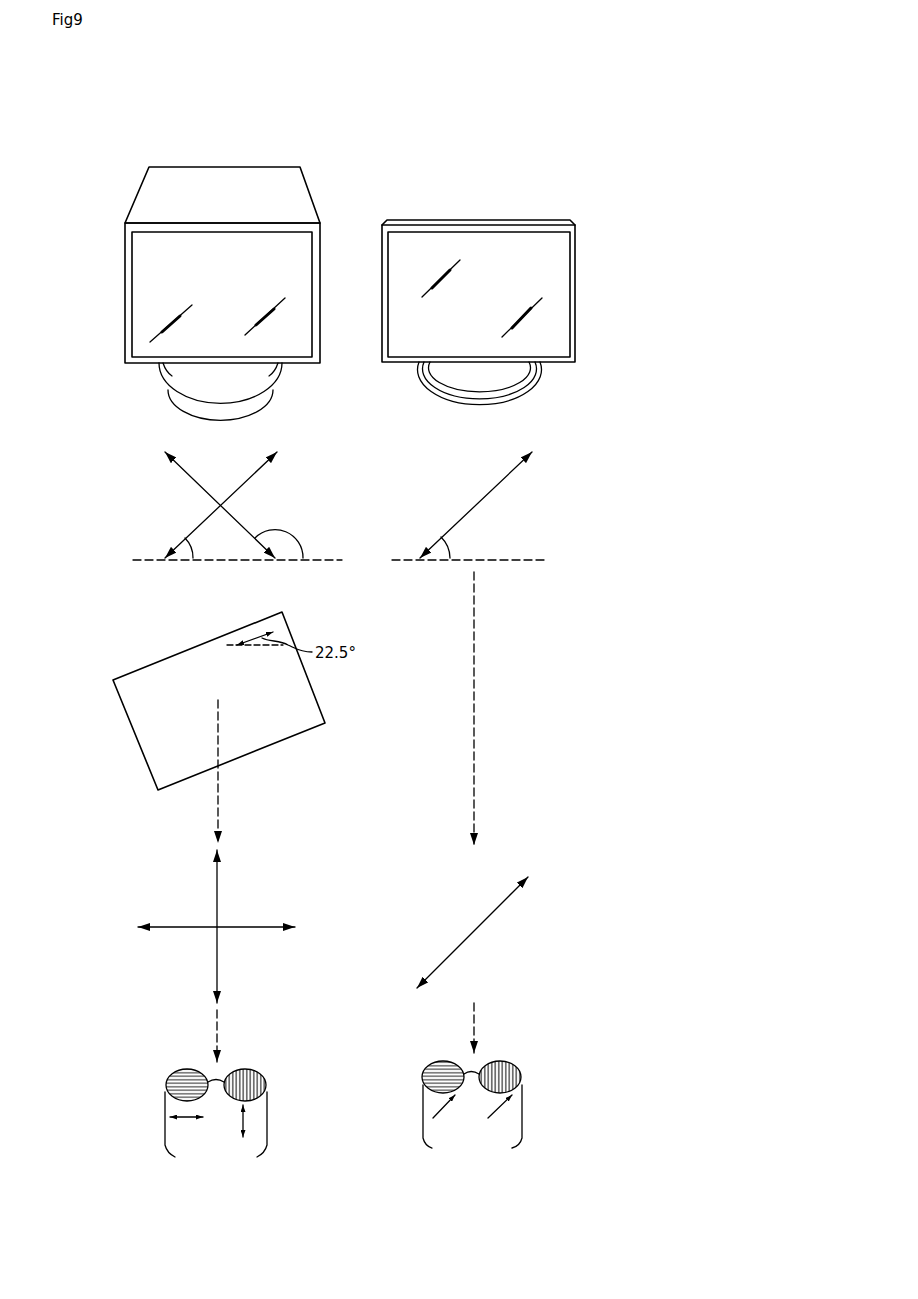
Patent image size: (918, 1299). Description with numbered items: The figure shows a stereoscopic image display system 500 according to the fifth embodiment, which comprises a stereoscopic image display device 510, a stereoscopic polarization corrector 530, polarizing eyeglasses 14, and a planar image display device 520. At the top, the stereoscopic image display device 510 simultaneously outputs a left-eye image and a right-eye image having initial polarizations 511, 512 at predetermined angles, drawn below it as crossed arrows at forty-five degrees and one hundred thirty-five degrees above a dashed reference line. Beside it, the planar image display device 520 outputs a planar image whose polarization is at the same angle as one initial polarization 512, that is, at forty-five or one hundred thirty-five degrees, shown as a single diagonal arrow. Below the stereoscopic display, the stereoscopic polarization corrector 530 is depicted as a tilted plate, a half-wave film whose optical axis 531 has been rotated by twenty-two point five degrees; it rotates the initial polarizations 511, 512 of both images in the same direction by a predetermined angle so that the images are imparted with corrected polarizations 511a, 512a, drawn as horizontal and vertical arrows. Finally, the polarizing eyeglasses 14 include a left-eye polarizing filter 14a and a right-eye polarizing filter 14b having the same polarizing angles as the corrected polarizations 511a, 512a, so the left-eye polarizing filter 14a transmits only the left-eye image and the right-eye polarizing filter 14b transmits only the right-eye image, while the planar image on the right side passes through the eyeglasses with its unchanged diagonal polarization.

The stereoscopic image display system 500 is at (100, 93).
The stereoscopic image display device 510 is at (223, 167).
The planar image display device 520 is at (478, 220).
The initial polarization 511 is at (250, 537).
The initial polarization 512 is at (193, 537).
The stereoscopic polarization corrector 530 is at (133, 737).
The optical axis 531 is at (252, 642).
The corrected polarization 511a is at (182, 928).
The corrected polarization 512a is at (218, 902).
The polarizing eyeglasses 14 is at (167, 1118).
The left-eye polarizing filter 14a is at (197, 1080).
The right-eye polarizing filter 14b is at (252, 1080).